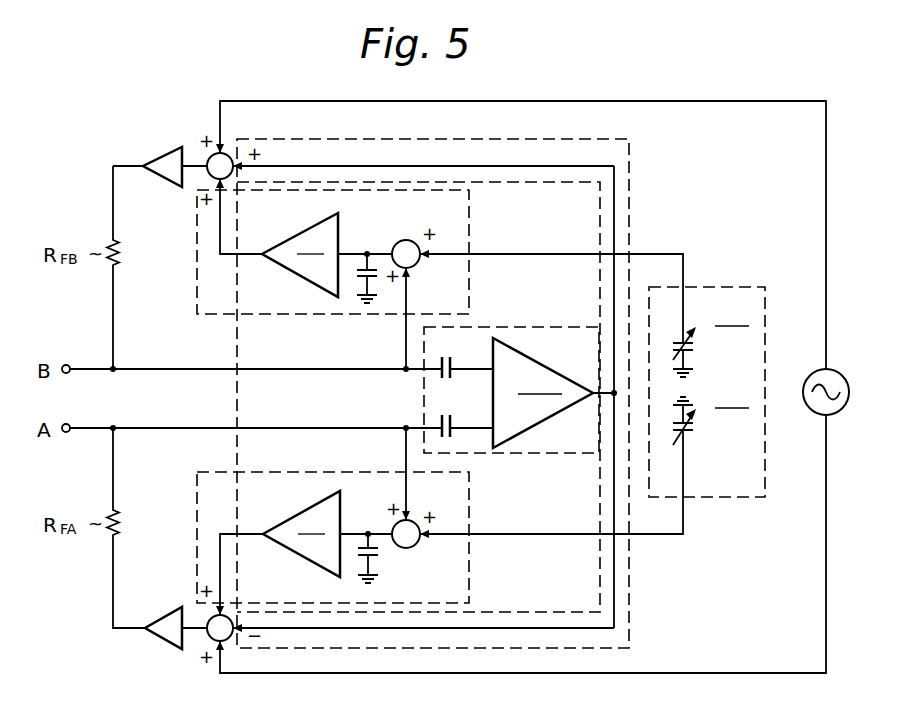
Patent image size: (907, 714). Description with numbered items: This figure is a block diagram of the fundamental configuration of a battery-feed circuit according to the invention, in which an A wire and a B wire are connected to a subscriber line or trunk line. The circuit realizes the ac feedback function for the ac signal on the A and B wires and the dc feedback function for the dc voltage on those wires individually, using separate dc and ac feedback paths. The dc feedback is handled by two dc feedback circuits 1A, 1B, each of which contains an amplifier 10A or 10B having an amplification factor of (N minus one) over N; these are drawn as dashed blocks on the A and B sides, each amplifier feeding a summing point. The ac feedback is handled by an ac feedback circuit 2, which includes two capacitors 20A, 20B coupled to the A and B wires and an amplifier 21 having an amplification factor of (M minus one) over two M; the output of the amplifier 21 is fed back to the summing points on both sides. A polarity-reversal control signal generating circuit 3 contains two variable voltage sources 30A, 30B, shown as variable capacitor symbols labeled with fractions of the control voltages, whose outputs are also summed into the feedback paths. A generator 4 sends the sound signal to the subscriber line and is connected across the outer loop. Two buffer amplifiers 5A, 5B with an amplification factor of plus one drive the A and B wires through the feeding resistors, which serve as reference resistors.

The dc feedback circuit 1A is at (258, 470).
The dc feedback circuit 1B is at (250, 314).
The ac feedback circuit 2 is at (525, 325).
The polarity-reversal control signal generating circuit 3 is at (730, 286).
The generator 4 is at (814, 374).
The buffer amplifier 5A is at (168, 607).
The buffer amplifier 5B is at (175, 150).
The amplifier 10A is at (294, 519).
The amplifier 10B is at (292, 238).
The capacitor 20A is at (450, 397).
The capacitor 20B is at (450, 340).
The amplifier 21 is at (549, 366).
The variable voltage source 30A is at (694, 430).
The variable voltage source 30B is at (694, 347).